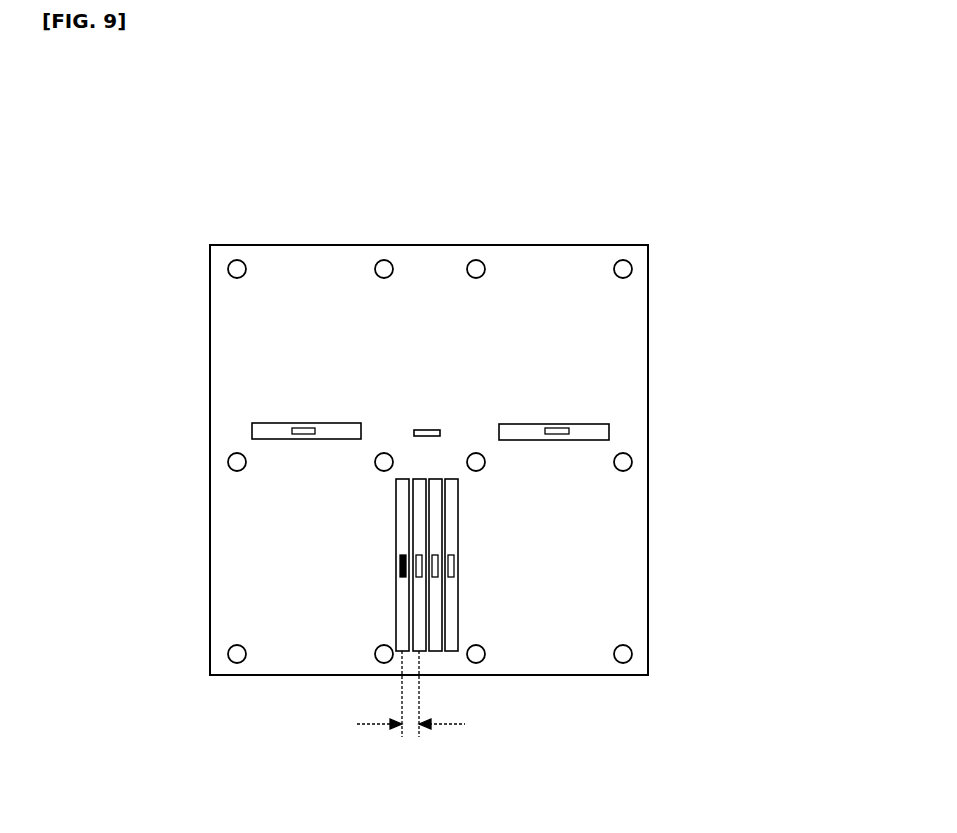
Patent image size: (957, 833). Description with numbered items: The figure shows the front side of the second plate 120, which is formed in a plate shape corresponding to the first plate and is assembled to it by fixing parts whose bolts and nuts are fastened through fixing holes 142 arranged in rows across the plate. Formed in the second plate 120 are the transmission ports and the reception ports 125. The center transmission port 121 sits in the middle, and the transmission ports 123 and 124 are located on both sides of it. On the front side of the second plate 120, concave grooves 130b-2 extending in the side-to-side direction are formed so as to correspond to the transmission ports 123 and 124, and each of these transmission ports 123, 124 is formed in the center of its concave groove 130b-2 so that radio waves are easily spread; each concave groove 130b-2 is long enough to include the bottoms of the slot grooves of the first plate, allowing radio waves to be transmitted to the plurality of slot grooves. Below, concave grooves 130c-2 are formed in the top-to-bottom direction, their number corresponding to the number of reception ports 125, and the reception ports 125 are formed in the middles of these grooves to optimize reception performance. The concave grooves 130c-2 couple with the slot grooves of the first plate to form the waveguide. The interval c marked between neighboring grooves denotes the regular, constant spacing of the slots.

The second plate 120 is at (222, 135).
The center transmission port 121 is at (426, 429).
The transmission port 123 is at (303, 431).
The transmission port 124 is at (557, 428).
The reception port 125 is at (397, 565).
The fixing hole 142 is at (236, 652).
The concave groove 130b-2 is at (268, 433).
The concave groove 130c-2 is at (451, 652).
The interval between slots c is at (411, 706).